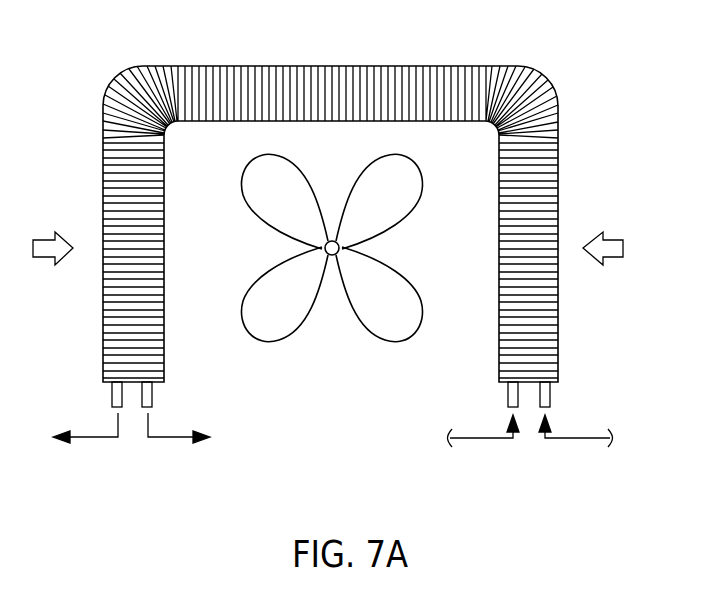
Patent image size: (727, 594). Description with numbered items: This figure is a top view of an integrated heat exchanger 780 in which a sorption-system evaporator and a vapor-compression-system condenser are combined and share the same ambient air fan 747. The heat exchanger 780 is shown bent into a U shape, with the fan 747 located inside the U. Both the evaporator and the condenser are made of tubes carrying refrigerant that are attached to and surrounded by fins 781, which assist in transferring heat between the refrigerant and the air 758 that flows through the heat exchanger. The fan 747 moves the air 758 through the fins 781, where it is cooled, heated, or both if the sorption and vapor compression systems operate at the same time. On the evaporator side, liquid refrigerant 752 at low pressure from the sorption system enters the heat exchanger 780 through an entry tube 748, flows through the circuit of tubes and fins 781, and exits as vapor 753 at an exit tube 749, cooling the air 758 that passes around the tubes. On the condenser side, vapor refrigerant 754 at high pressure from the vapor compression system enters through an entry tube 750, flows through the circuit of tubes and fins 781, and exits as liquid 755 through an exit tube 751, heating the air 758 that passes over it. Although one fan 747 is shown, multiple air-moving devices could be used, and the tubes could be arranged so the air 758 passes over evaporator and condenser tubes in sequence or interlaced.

The ambient air fan 747 is at (403, 172).
The entry tube 748 is at (550, 393).
The exit tube 749 is at (112, 393).
The entry tube 750 is at (508, 393).
The exit tube 751 is at (152, 393).
The liquid refrigerant 752 is at (568, 440).
The vapor 753 is at (95, 438).
The vapor refrigerant 754 is at (480, 440).
The liquid 755 is at (172, 438).
The air 758 is at (52, 238).
The integrated heat exchanger 780 is at (556, 146).
The fins 781 is at (557, 180).